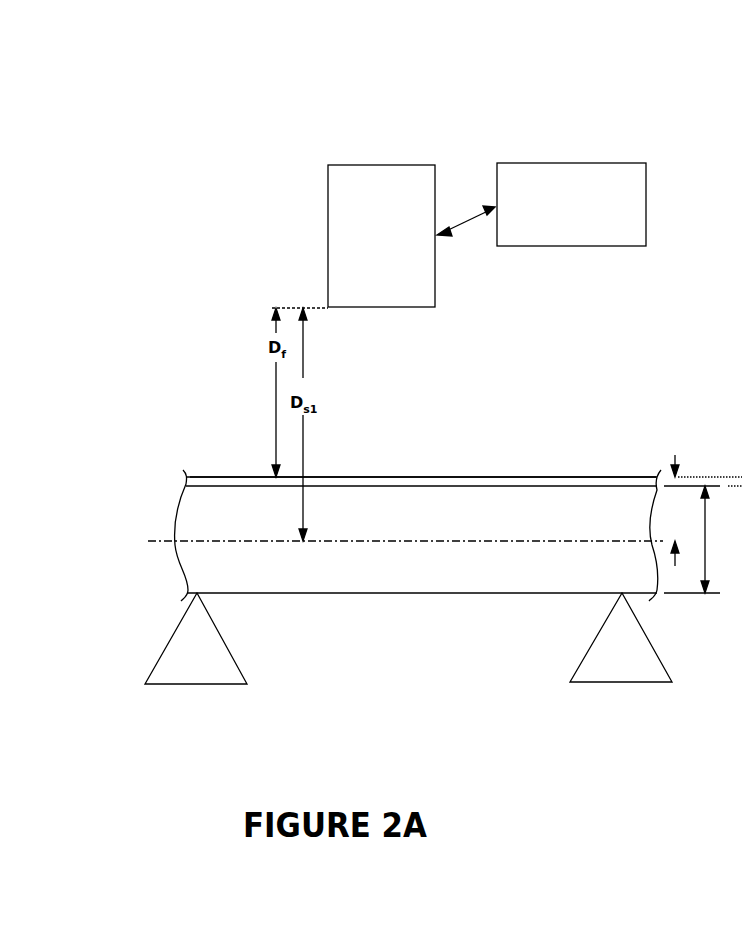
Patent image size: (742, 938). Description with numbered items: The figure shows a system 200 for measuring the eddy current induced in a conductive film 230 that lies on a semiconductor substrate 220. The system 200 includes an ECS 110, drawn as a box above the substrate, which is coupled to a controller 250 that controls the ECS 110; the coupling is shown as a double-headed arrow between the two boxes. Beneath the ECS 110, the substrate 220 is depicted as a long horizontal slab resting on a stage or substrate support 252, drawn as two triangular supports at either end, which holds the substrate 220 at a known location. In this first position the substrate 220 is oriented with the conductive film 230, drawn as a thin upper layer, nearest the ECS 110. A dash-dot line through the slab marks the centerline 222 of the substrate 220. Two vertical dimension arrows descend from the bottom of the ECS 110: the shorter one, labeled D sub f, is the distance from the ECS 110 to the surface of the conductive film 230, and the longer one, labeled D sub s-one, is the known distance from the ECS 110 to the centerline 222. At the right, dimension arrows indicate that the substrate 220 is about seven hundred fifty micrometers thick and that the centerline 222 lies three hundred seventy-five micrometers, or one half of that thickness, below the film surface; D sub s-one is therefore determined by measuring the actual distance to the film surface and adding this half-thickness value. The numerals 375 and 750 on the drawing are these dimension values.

The system 200 is at (409, 78).
The ECS 110 is at (417, 165).
The controller 250 is at (540, 163).
The semiconductor substrate 220 is at (368, 594).
The centerline 222 is at (217, 543).
The conductive film 230 is at (595, 480).
The substrate support 252 is at (166, 650).
The half-thickness dimension 375 is at (702, 510).
The thickness dimension 750 is at (692, 539).